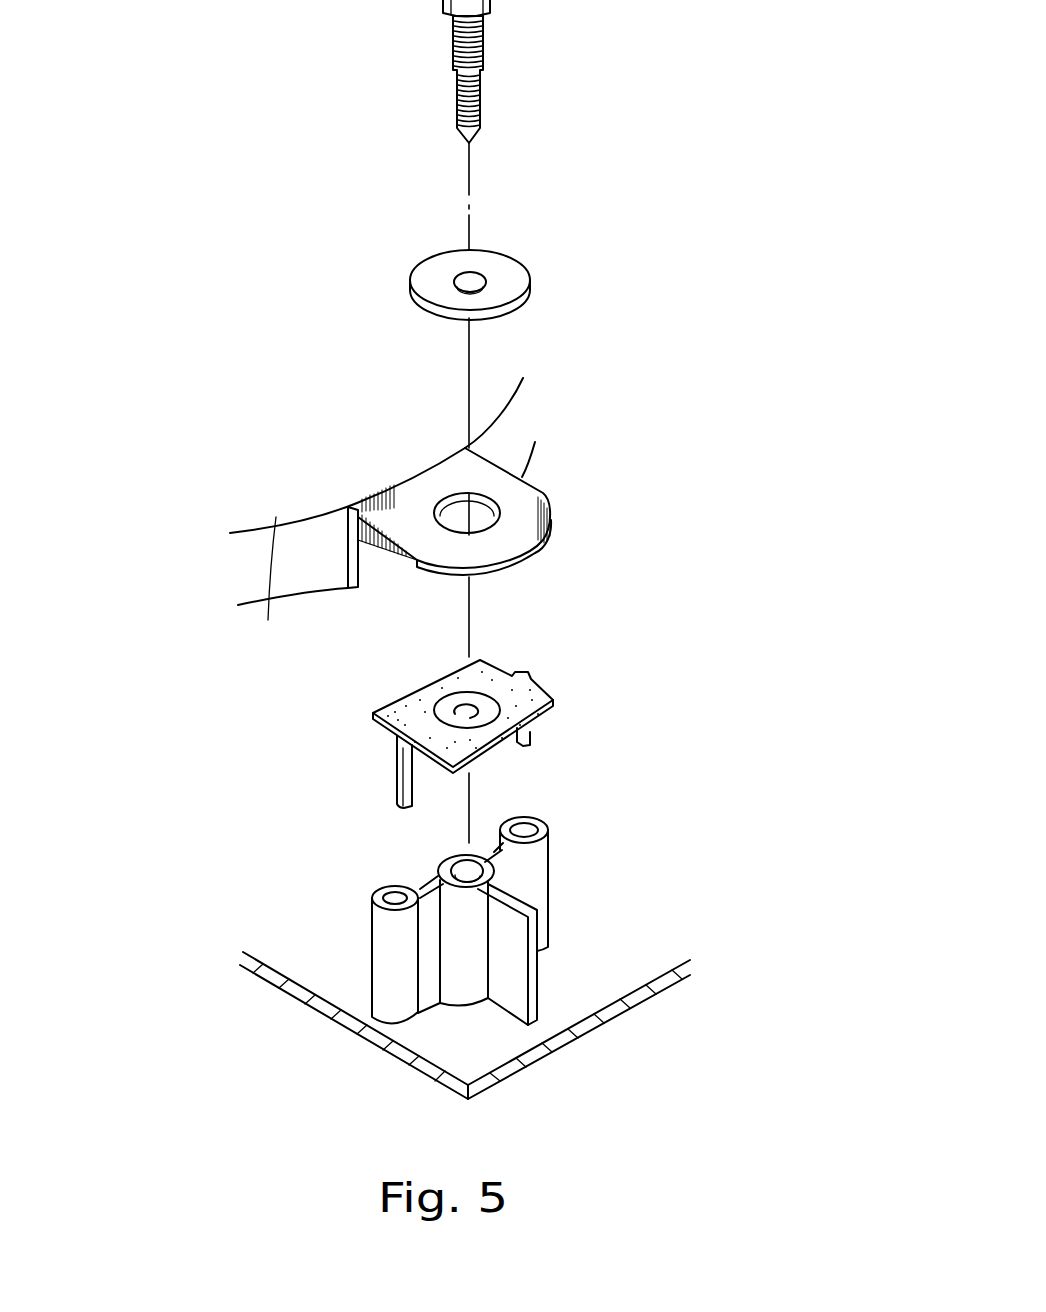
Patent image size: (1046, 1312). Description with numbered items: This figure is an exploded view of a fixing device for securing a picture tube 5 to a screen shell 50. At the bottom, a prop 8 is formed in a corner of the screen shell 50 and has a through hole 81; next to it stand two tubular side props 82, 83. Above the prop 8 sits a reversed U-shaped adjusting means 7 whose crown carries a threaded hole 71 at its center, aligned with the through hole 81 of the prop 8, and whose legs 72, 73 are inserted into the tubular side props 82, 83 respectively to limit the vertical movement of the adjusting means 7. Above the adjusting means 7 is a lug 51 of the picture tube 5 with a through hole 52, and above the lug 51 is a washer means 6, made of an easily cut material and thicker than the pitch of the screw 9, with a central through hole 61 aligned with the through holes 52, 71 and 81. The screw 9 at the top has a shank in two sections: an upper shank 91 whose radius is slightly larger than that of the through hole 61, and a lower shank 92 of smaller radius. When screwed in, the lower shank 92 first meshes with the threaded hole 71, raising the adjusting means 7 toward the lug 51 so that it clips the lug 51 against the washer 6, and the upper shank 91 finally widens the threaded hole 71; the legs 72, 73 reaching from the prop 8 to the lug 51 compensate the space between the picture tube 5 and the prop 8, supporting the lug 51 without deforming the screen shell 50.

The picture tube 5 is at (416, 522).
The lug 51 is at (480, 512).
The through hole 52 is at (470, 523).
The washer means 6 is at (461, 293).
The through hole 61 is at (457, 290).
The adjusting means 7 is at (478, 706).
The threaded hole 71 is at (473, 703).
The leg 72 is at (395, 774).
The leg 73 is at (527, 737).
The prop 8 is at (518, 966).
The through hole 81 is at (463, 868).
The tubular side prop 82 is at (405, 988).
The tubular side prop 83 is at (535, 853).
The screw 9 is at (473, 71).
The upper shank 91 is at (453, 40).
The lower shank 92 is at (457, 104).
The screen shell 50 is at (642, 973).